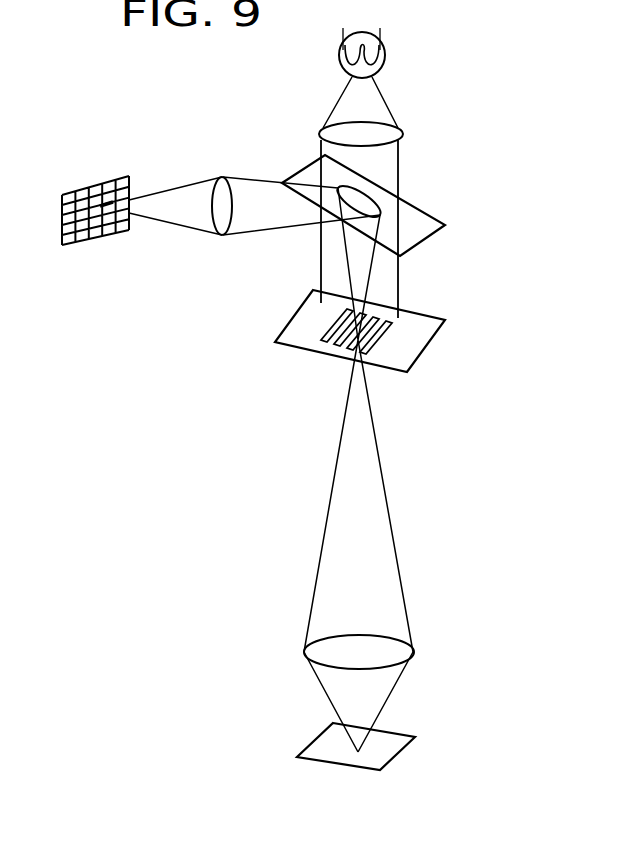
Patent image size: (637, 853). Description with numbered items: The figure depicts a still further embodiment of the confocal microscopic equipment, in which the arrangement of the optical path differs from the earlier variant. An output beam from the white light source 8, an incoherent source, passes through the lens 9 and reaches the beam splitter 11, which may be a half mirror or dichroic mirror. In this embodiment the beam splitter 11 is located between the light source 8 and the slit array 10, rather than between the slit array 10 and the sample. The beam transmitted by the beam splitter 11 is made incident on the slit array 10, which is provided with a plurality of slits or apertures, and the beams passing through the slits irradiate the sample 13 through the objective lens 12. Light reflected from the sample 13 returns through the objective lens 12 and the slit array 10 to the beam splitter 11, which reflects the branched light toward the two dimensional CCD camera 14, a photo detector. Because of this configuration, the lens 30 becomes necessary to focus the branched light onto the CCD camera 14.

The white light source 8 is at (388, 53).
The lens 9 is at (390, 133).
The slit array 10 is at (427, 327).
The beam splitter 11 is at (428, 225).
The objective lens 12 is at (390, 650).
The sample 13 is at (395, 742).
The two dimensional CCD camera 14 is at (100, 242).
The lens 30 is at (220, 197).